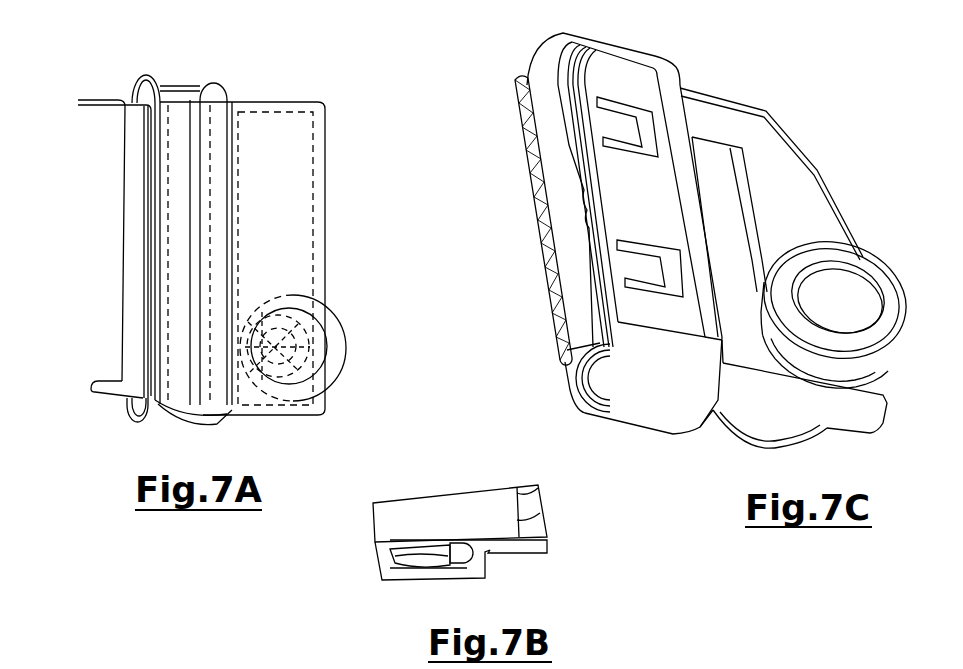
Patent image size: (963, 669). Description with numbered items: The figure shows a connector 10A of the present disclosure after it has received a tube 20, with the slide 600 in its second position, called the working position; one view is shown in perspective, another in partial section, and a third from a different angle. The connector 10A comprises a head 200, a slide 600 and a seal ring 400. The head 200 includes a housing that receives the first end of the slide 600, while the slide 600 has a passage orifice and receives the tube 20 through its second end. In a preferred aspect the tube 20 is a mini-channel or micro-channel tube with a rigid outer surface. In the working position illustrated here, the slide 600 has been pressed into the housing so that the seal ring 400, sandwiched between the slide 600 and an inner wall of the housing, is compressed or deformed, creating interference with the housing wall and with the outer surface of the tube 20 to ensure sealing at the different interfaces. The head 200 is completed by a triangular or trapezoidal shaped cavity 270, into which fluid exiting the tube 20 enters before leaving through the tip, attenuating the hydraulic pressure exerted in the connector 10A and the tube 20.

In FIG. 7C, the connector 10A is at (793, 125).
In FIG. 7A, the tube 20 is at (91, 389).
In FIG. 7B, the tube 20 is at (385, 525).
In FIG. 7C, the tube 20 is at (553, 327).
In FIG. 7A, the head 200 is at (293, 250).
In FIG. 7B, the head 200 is at (547, 540).
In FIG. 7C, the triangular or trapezoidal shaped cavity 270 is at (783, 187).
In FIG. 7A, the seal ring 400 is at (210, 108).
In FIG. 7B, the seal ring 400 is at (463, 550).
In FIG. 7A, the slide 600 is at (177, 88).
In FIG. 7B, the slide 600 is at (423, 558).